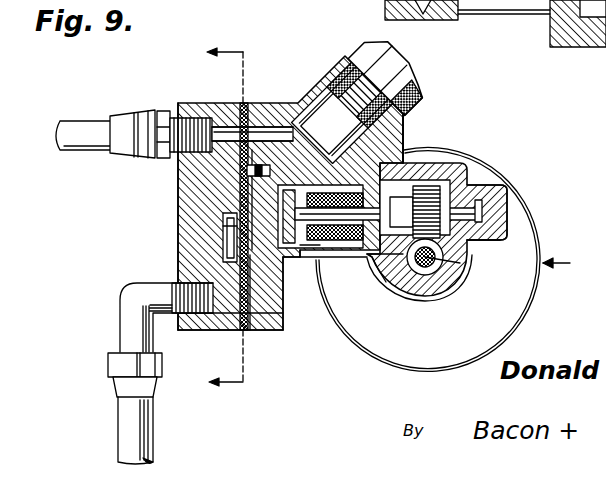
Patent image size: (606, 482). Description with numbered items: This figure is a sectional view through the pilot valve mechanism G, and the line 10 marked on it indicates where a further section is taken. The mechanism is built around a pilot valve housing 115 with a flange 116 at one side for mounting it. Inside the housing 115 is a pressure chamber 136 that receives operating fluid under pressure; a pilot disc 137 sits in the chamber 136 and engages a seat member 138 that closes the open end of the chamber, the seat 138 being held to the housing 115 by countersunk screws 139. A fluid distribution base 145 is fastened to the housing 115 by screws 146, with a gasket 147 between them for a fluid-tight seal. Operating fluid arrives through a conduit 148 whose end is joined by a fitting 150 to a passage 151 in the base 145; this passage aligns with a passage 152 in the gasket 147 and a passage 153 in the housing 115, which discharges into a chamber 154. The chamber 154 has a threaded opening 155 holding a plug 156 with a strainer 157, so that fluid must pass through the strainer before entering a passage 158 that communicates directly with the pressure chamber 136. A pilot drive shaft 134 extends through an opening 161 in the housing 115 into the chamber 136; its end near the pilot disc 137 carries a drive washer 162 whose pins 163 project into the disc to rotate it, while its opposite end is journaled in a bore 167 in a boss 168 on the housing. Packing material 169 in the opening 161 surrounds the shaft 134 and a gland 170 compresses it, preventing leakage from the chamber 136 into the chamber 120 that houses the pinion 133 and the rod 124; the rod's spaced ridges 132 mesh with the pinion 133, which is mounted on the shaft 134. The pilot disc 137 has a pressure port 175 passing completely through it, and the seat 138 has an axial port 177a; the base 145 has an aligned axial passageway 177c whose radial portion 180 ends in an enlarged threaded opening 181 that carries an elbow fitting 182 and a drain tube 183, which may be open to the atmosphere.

The section line 10- 10 is at (226, 221).
The pilot valve housing 115 is at (409, 124).
The flange 116 is at (538, 218).
The chamber 120 is at (434, 273).
The rod 124 is at (424, 267).
The spaced ridges 132 is at (450, 271).
The pinion 133 is at (442, 190).
The pilot drive shaft 134 is at (471, 246).
The pressure chamber 136 is at (318, 258).
The pilot disc 137 is at (292, 268).
The seat member 138 is at (265, 332).
The countersunk screws 139 is at (192, 181).
The fluid distribution base 145 is at (176, 111).
The screws 146 is at (166, 166).
The gasket 147 is at (244, 118).
The conduit 148 is at (77, 121).
The fitting 150 is at (140, 113).
The passage 151 is at (218, 127).
The passage 152 is at (262, 127).
The passage 153 is at (298, 103).
The chamber 154 is at (331, 88).
The threaded opening 155 is at (414, 140).
The plug 156 is at (412, 88).
The strainer 157 is at (392, 72).
The passage 158 is at (247, 171).
The opening 161 is at (364, 258).
The drive washer 162 is at (303, 259).
The pins 163 is at (320, 216).
The bore 167 is at (484, 243).
The boss 168 is at (498, 188).
The packing material 169 is at (374, 266).
The gland 170 is at (307, 252).
The pressure port 175 is at (331, 123).
The axial port 177a is at (232, 214).
The axial passageway 177c is at (224, 228).
The radial portion 180 is at (221, 332).
The enlarged threaded opening 181 is at (198, 333).
The elbow fitting 182 is at (120, 326).
The drain tube 183 is at (130, 429).
The pilot valve mechanism G is at (564, 262).